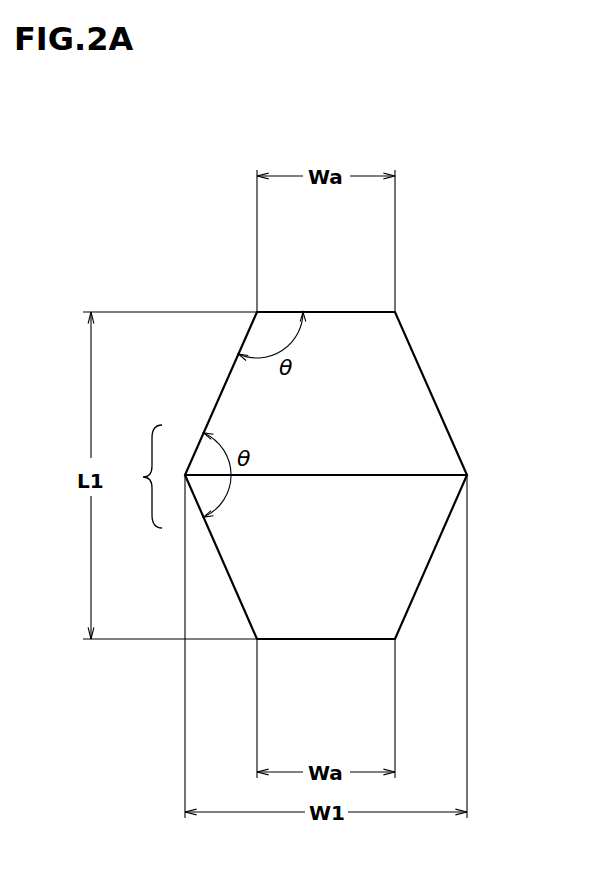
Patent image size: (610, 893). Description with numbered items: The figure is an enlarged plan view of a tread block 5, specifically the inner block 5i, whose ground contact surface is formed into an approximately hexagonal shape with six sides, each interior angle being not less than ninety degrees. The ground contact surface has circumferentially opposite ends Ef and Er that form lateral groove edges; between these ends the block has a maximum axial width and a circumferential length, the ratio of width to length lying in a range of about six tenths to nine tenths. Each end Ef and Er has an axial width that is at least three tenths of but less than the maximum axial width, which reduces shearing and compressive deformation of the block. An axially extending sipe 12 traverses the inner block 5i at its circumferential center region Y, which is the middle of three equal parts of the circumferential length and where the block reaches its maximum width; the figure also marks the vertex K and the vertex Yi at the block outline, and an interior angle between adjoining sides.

The tread block 5 is at (363, 438).
The inner block 5i is at (420, 312).
The sipe 12 is at (377, 473).
The vertex K is at (475, 471).
The circumferential center region Y is at (139, 476).
The vertex Yi is at (183, 470).
The circumferential end Ef is at (325, 312).
The circumferential end Er is at (325, 639).